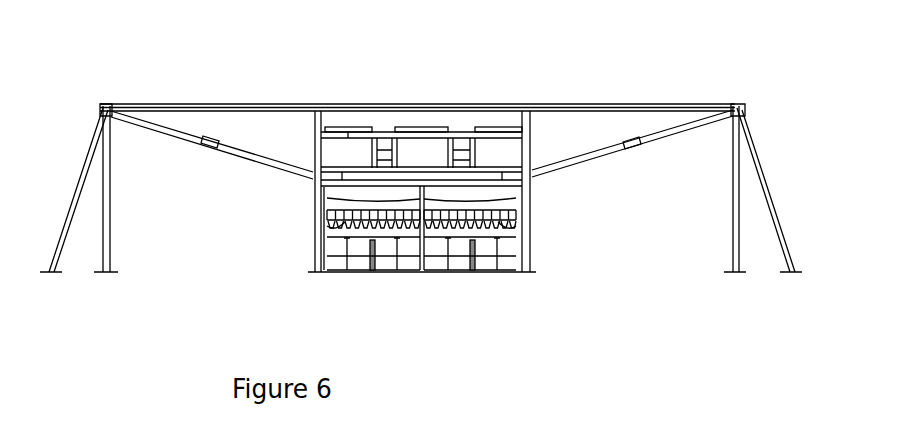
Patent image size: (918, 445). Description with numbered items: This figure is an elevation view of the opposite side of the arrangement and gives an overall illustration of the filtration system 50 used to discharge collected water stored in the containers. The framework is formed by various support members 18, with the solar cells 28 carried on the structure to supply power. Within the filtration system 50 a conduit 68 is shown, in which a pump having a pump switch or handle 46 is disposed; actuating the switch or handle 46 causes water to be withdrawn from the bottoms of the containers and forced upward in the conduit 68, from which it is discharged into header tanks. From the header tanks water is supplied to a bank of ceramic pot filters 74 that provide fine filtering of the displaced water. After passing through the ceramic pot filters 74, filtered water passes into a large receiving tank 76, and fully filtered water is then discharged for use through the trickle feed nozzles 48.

The support members 18 is at (262, 152).
The solar cells 28 is at (490, 128).
The pump switch or handle 46 is at (424, 222).
The trickle feed nozzles 48 is at (397, 243).
The filtration system 50 is at (563, 215).
The conduit 68 is at (320, 200).
The ceramic pot filters 74 is at (348, 232).
The receiving tank 76 is at (522, 257).